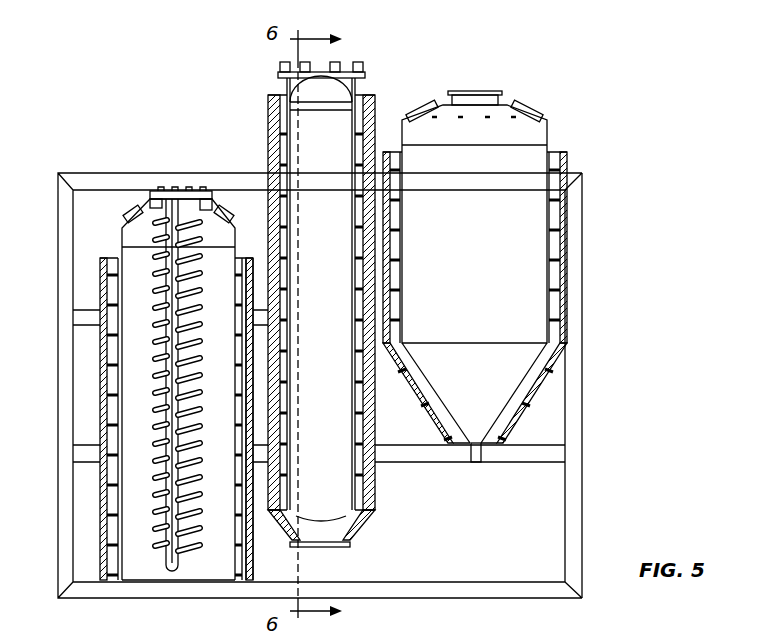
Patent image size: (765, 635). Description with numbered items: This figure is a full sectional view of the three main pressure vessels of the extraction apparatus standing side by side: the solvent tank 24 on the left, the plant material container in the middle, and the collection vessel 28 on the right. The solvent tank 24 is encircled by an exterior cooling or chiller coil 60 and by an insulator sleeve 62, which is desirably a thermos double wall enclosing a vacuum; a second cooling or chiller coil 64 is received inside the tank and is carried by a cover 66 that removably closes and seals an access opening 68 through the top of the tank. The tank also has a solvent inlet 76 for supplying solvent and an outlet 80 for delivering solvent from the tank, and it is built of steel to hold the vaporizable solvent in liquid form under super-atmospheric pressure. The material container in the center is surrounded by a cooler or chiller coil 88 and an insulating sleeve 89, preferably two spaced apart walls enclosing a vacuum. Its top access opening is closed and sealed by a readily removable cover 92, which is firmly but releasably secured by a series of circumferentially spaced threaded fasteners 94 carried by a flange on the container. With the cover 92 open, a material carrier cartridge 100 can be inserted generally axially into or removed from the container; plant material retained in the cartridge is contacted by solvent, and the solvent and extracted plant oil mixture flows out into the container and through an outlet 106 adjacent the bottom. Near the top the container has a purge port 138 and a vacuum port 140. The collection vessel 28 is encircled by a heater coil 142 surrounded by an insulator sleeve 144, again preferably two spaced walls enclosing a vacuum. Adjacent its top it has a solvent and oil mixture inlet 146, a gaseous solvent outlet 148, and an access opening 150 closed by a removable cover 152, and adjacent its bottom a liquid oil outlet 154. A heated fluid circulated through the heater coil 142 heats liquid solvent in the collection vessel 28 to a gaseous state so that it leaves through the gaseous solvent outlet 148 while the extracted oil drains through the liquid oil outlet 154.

The solvent tank 24 is at (115, 248).
The collection vessel 28 is at (556, 140).
The exterior cooling or chiller coil 60 is at (95, 410).
The insulator sleeve 62 is at (100, 505).
The cooling or chiller coil 64 is at (165, 532).
The cover 66 is at (157, 195).
The access opening 68 is at (147, 204).
The solvent inlet 76 is at (72, 191).
The outlet 80 is at (226, 210).
The cooler or chiller coil 88 is at (378, 466).
The insulating sleeve 89 is at (338, 490).
The removable cover 92 is at (346, 70).
The threaded fasteners 94 is at (357, 75).
The material carrier cartridge 100 is at (376, 508).
The outlet 106 is at (323, 551).
The purge port 138 is at (118, 222).
The vacuum port 140 is at (212, 198).
The heater coil 142 is at (562, 225).
The insulator sleeve 144 is at (572, 281).
The solvent and oil mixture inlet 146 is at (415, 110).
The gaseous solvent outlet 148 is at (532, 104).
The access opening 150 is at (488, 100).
The removable cover 152 is at (472, 92).
The liquid oil outlet 154 is at (480, 455).